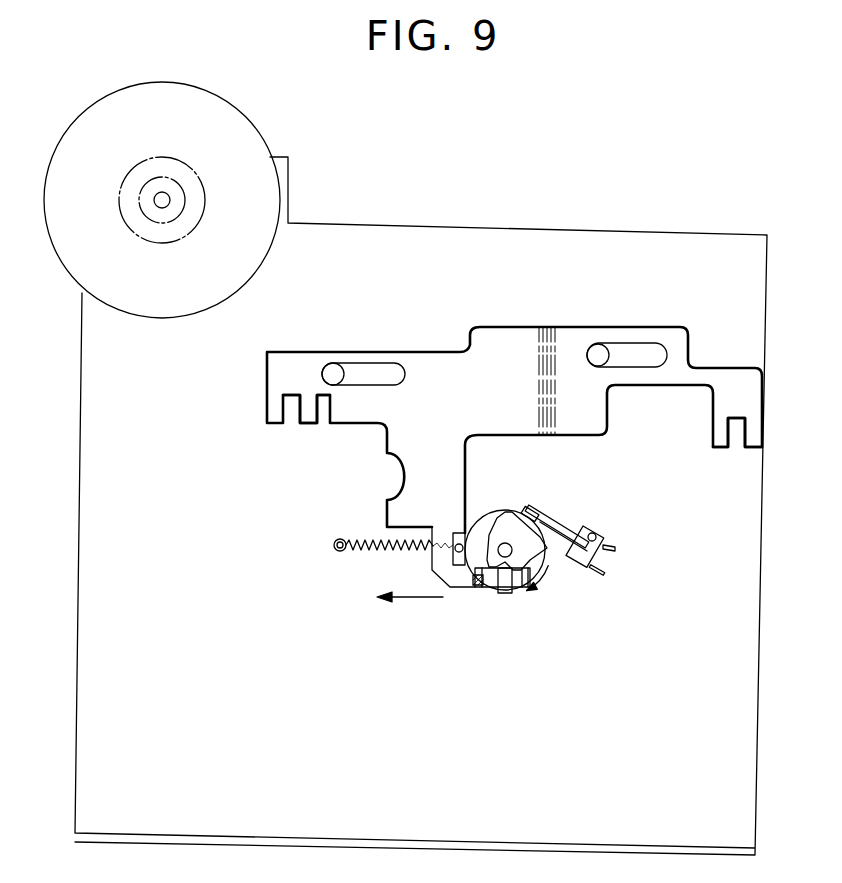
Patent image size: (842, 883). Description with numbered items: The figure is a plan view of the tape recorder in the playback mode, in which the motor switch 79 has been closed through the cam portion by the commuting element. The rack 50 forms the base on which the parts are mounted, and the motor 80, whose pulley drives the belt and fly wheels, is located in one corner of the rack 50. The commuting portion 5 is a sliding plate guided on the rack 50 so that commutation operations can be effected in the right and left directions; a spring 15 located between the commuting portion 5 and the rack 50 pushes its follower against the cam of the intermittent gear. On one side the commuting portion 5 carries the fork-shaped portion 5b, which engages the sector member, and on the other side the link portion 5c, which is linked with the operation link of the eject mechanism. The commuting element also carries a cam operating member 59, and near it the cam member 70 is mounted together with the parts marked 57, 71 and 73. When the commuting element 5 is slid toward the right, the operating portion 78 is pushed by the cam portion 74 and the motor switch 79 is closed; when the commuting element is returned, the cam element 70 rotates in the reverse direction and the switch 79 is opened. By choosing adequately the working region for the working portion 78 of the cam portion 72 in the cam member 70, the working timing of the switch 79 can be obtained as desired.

The commuting portion 5 is at (529, 340).
The fork-shaped portion 5b is at (307, 412).
The link portion 5c is at (722, 440).
The spring 15 is at (389, 556).
The rack 50 is at (416, 223).
The bracket 57 is at (488, 588).
The cam operating member 59 is at (523, 588).
The cam member 70 is at (478, 580).
The tab 71 is at (503, 594).
The cam portion 72 is at (510, 514).
The pawl 73 is at (495, 538).
The cam portion 74 is at (548, 570).
The operating portion 78 is at (540, 512).
The motor switch 79 is at (586, 562).
The motor 80 is at (279, 143).